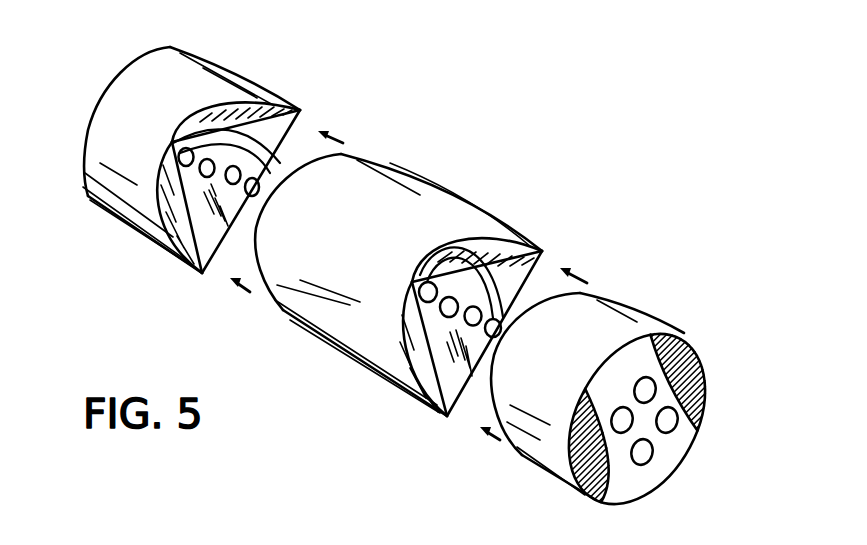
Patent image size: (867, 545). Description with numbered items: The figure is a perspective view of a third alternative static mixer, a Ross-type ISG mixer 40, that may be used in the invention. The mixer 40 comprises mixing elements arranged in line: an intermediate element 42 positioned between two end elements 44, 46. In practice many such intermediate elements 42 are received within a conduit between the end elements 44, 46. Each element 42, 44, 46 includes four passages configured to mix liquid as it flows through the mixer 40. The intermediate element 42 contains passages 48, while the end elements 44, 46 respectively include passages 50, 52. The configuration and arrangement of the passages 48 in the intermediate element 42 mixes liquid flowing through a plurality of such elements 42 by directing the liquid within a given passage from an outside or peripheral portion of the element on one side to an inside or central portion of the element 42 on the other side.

The mixer 40 is at (312, 404).
The intermediate element 42 is at (456, 187).
The end element 44 is at (650, 299).
The end element 46 is at (247, 66).
The passages 48 is at (433, 255).
The passages 50 is at (622, 407).
The passages 52 is at (265, 171).